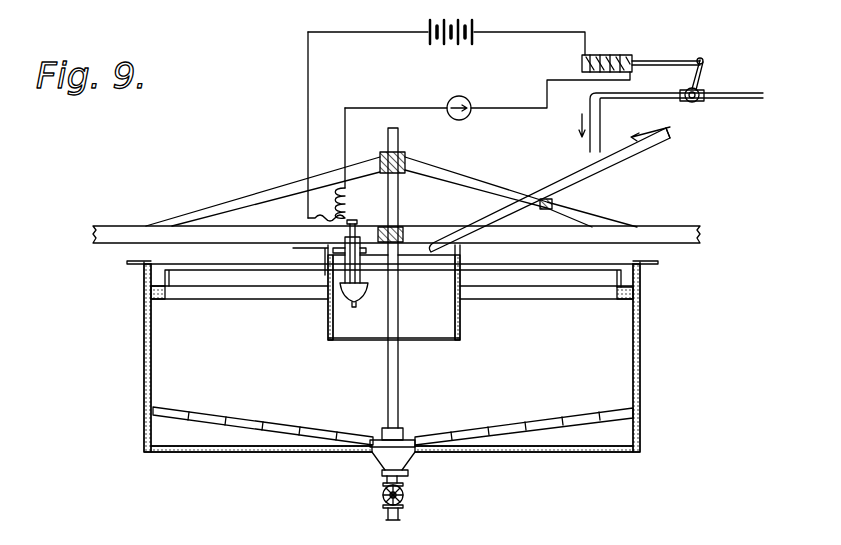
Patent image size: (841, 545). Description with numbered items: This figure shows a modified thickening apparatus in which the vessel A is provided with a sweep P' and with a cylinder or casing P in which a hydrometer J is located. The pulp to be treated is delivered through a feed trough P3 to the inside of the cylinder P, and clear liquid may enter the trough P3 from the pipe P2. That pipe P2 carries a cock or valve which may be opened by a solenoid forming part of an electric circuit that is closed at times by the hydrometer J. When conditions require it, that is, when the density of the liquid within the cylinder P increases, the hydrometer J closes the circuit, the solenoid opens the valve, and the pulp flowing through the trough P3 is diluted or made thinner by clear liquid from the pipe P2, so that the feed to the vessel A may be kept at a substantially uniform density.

The cylinder or casing P is at (480, 180).
The sweep P' is at (562, 230).
The pipe P2 is at (748, 90).
The feed trough P3 is at (668, 144).
The hydrometer J is at (347, 300).
The vessel A is at (642, 383).